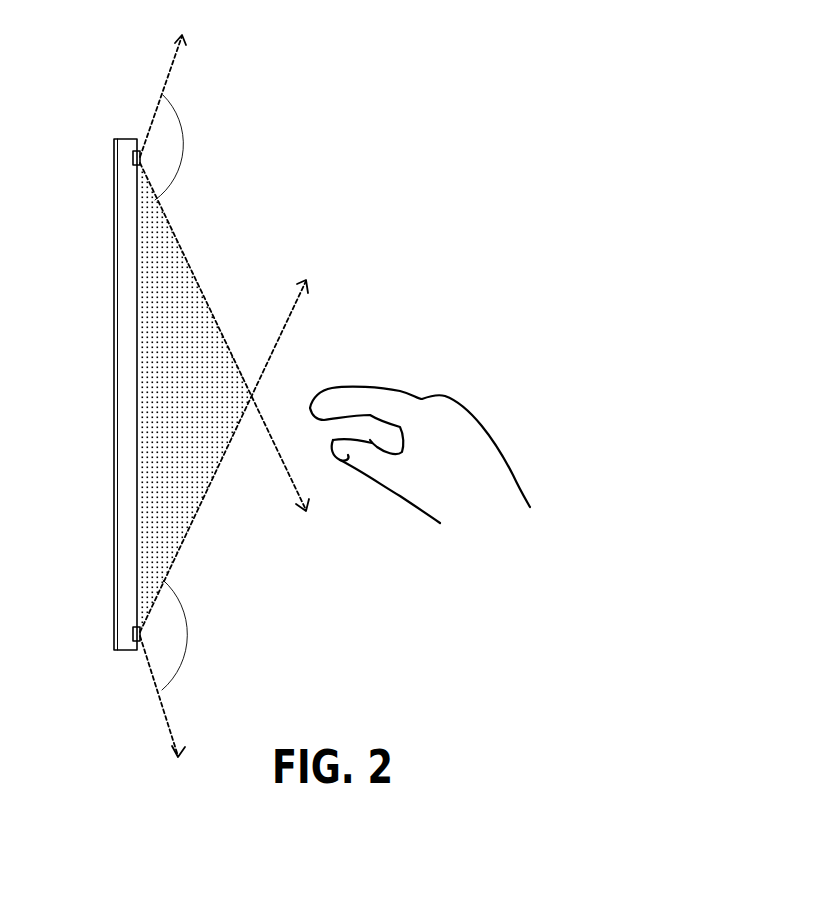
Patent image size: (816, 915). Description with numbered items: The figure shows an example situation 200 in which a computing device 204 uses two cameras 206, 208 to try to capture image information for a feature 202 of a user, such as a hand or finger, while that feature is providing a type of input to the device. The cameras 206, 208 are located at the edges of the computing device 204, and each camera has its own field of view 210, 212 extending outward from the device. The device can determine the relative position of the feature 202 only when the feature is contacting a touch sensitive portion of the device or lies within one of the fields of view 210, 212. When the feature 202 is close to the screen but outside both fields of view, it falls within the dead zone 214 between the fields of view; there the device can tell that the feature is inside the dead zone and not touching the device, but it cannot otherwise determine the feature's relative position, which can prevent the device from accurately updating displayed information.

The example situation 200 is at (598, 204).
The feature of a user 202 is at (520, 483).
The computing device 204 is at (112, 348).
The camera 206 is at (133, 157).
The camera 208 is at (133, 636).
The field of view 210 is at (187, 160).
The field of view 212 is at (187, 652).
The dead zone 214 is at (195, 398).